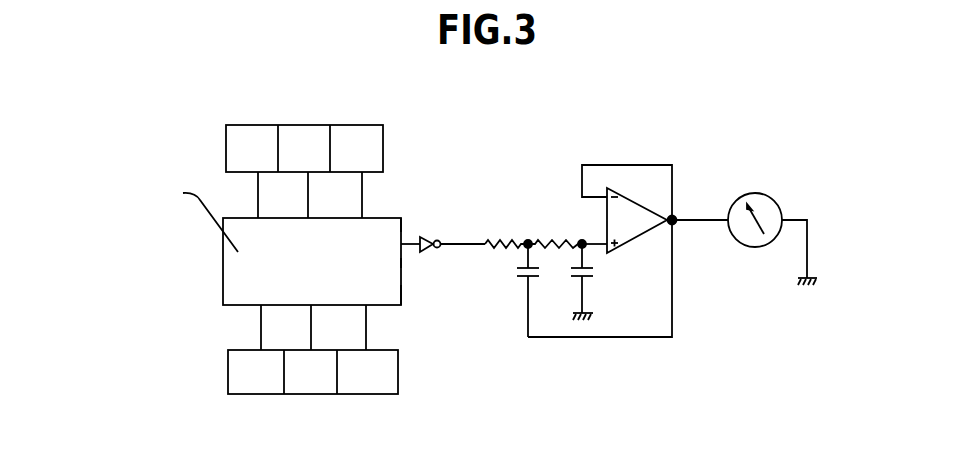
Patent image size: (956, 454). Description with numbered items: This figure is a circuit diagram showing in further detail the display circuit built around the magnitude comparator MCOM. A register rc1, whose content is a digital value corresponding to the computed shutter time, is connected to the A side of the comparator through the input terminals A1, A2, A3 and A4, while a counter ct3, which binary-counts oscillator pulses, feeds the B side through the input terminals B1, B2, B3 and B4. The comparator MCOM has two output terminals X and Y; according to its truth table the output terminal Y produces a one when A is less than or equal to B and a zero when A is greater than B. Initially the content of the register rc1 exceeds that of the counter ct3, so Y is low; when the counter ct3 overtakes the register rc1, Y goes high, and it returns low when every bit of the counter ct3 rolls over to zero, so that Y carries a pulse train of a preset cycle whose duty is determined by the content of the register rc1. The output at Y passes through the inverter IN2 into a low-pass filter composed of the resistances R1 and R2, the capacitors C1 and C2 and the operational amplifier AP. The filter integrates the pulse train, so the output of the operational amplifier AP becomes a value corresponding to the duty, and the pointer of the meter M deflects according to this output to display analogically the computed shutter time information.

The magnitude comparator MCOM is at (372, 218).
The register rc1 is at (304, 128).
The counter ct3 is at (313, 397).
The A input terminal A1 is at (263, 210).
The A input terminal A2 is at (311, 210).
The A input terminal A3 is at (367, 210).
The A input terminal A4 is at (391, 226).
The comparator input B1 is at (265, 315).
The comparator input B2 is at (309, 315).
The comparator input B3 is at (369, 315).
The comparator input B4 is at (393, 294).
The comparator output X is at (392, 270).
The output terminal Y is at (401, 248).
The inverter IN2 is at (432, 238).
The resistance R1 is at (501, 251).
The resistance R2 is at (557, 238).
The capacitor C1 is at (519, 272).
The capacitor C2 is at (576, 272).
The operational amplifier AP is at (635, 208).
The meter M is at (754, 192).